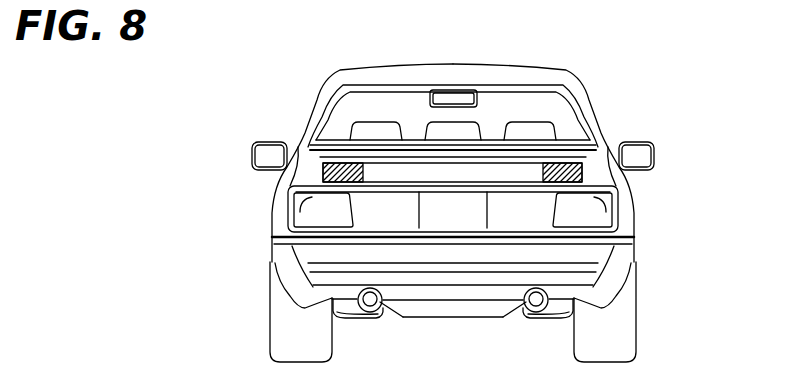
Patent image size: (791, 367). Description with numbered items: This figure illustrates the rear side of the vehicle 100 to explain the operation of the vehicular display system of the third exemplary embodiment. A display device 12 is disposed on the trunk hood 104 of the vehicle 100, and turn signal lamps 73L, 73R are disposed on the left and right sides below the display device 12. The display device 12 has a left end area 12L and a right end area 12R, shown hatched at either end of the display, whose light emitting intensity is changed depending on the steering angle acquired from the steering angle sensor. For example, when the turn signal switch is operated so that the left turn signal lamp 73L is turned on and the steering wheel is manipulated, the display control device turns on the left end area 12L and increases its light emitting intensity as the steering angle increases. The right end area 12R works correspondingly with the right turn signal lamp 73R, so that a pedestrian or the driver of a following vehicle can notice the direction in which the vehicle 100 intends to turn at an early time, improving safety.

The vehicle 100 is at (352, 62).
The display device 12 is at (492, 163).
The left end area 12L is at (347, 168).
The right end area 12R is at (562, 168).
The trunk hood 104 is at (300, 176).
The left turn signal lamp 73L is at (313, 210).
The right turn signal lamp 73R is at (593, 210).